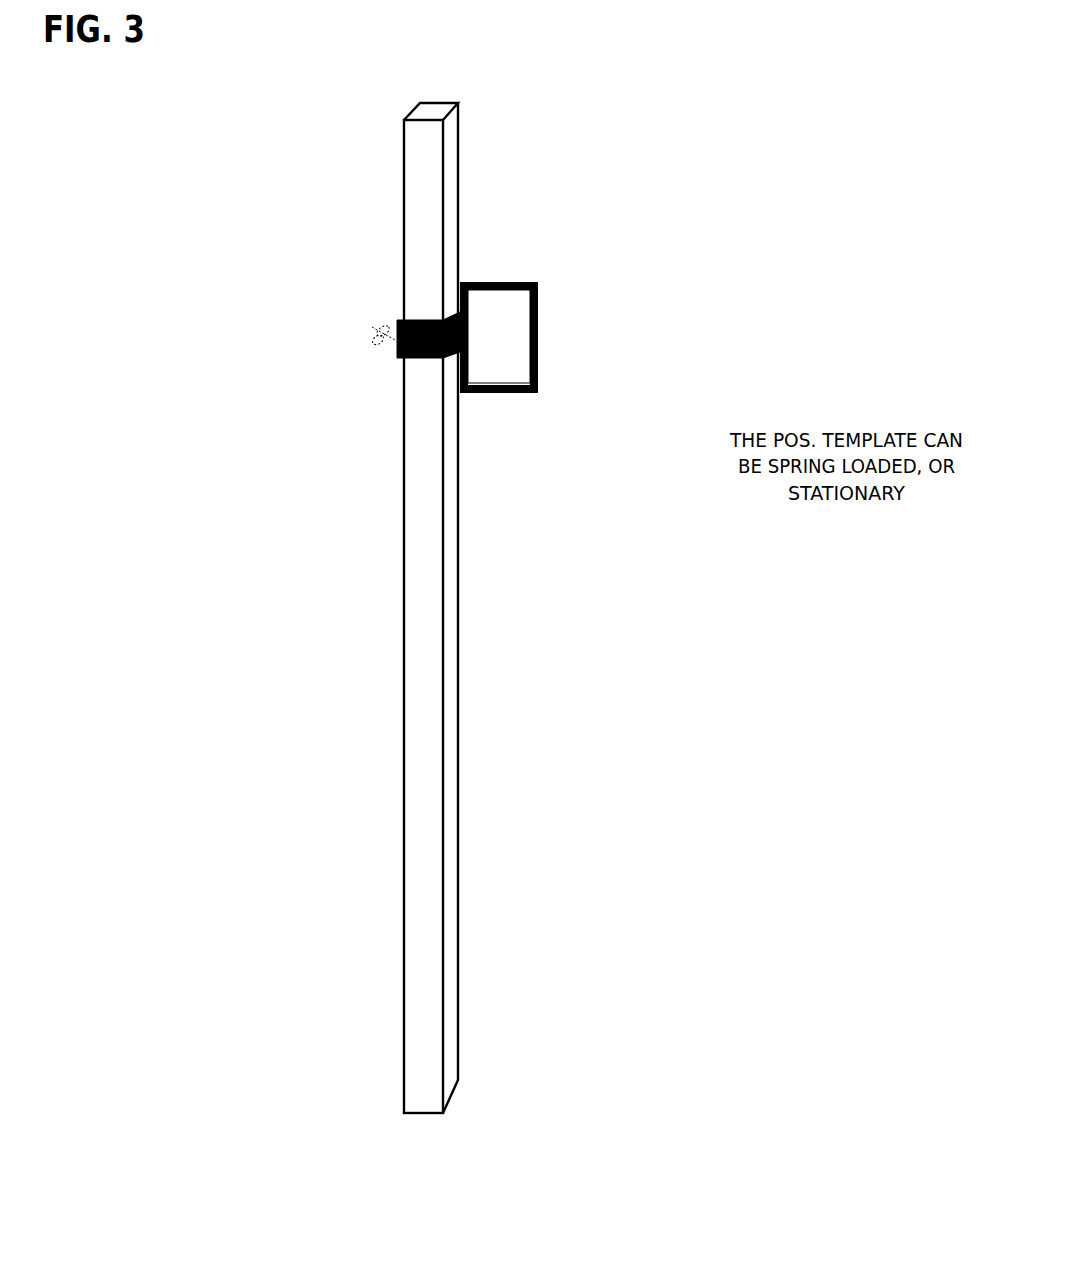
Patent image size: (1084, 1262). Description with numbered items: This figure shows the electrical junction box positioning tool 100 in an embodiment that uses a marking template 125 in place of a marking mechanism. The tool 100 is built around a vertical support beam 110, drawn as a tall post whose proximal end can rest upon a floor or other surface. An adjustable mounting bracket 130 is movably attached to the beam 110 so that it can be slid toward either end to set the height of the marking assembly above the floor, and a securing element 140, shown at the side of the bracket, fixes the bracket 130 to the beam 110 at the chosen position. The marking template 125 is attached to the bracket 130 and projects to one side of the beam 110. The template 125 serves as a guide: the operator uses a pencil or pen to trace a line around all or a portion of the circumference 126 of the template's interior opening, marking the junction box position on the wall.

The tool 100 is at (494, 558).
The vertical support beam 110 is at (445, 575).
The marking template 125 is at (628, 350).
The circumference of the interior opening 126 is at (475, 288).
The adjustable mounting bracket 130 is at (405, 368).
The securing element 140 is at (393, 337).